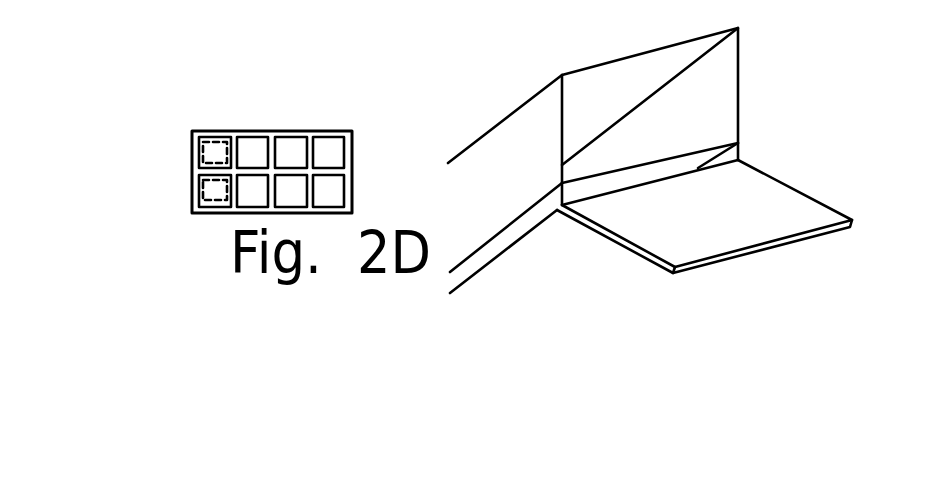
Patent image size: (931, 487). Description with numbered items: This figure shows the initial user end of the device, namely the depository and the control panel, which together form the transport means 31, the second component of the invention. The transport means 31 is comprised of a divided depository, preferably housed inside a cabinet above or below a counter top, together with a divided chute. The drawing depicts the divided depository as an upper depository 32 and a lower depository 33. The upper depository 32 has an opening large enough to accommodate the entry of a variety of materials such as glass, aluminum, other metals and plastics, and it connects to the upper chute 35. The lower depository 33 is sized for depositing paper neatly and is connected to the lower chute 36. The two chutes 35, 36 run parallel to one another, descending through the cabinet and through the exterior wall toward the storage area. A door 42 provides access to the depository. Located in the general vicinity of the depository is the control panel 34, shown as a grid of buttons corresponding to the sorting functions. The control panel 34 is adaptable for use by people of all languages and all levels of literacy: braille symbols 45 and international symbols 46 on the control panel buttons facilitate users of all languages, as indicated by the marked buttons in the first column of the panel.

The transport means 31 is at (621, 163).
The upper depository 32 is at (683, 105).
The lower depository 33 is at (612, 183).
The control panel 34 is at (204, 114).
The upper chute 35 is at (502, 160).
The lower chute 36 is at (495, 248).
The door 42 is at (745, 218).
The braille symbols 45 is at (213, 153).
The international symbols 46 is at (212, 193).